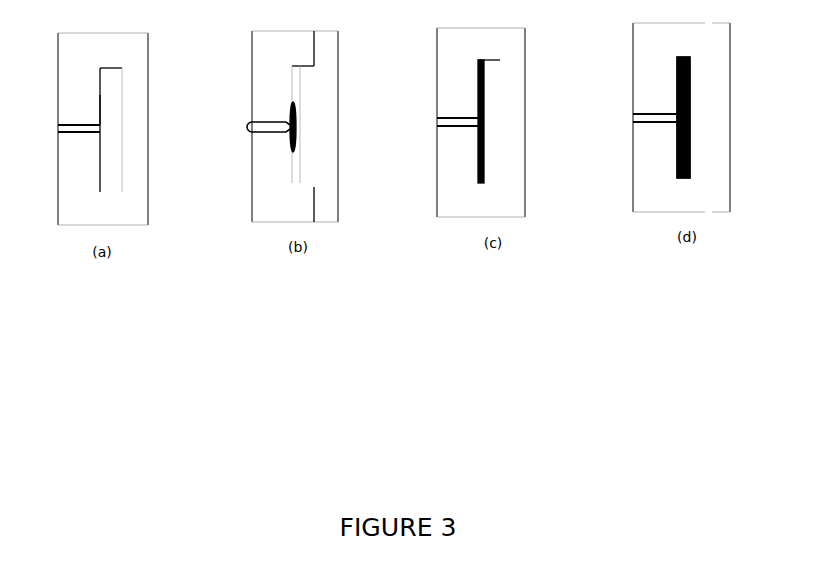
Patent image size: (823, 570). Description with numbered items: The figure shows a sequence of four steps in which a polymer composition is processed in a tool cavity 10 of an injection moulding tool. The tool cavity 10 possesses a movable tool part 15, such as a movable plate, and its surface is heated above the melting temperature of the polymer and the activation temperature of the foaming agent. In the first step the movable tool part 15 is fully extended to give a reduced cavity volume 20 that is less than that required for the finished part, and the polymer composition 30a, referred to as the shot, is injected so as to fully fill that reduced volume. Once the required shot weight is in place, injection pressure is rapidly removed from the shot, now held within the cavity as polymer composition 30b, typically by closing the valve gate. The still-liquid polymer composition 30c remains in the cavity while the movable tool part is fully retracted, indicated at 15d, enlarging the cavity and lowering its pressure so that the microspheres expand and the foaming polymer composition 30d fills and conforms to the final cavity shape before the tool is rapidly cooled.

In FIG. 3a, the tool cavity 10 is at (132, 138).
In FIG. 3a, the movable tool part 15 is at (107, 88).
In FIG. 3a, the cavity volume 20 is at (100, 110).
In FIG. 3a, the polymer composition 30a is at (78, 132).
In FIG. 3b, the polymer composition 30b is at (290, 135).
In FIG. 3c, the polymer composition 30c is at (477, 137).
In FIG. 3d, the movable tool part (fully retracted) 15d is at (690, 105).
In FIG. 3d, the polymer composition 30d is at (676, 142).